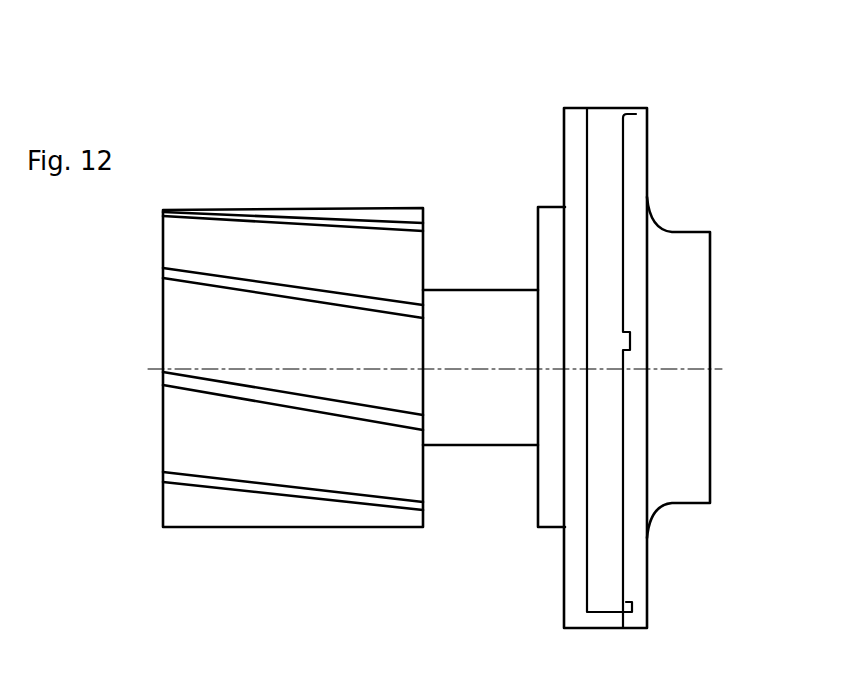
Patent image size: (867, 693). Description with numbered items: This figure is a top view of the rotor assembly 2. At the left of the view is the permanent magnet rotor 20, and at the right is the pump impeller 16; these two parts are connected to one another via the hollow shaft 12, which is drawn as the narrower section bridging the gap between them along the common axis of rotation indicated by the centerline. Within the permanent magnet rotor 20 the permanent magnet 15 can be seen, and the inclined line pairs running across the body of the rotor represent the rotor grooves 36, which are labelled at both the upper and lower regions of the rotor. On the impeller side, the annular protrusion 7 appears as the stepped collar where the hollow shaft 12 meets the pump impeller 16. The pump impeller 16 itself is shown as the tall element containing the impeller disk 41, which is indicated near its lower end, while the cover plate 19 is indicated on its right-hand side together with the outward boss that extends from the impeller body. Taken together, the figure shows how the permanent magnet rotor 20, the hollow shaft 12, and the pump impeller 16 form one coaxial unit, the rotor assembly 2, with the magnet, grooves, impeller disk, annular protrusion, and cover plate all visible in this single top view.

The rotor assembly 2 is at (460, 107).
The permanent magnet rotor 20 is at (278, 207).
The permanent magnet 15 is at (223, 338).
The rotor grooves 36 is at (363, 307).
The hollow shaft 12 is at (492, 345).
The annular protrusion 7 is at (538, 482).
The pump impeller 16 is at (608, 107).
The impeller disk 41 is at (573, 562).
The cover plate 19 is at (633, 170).